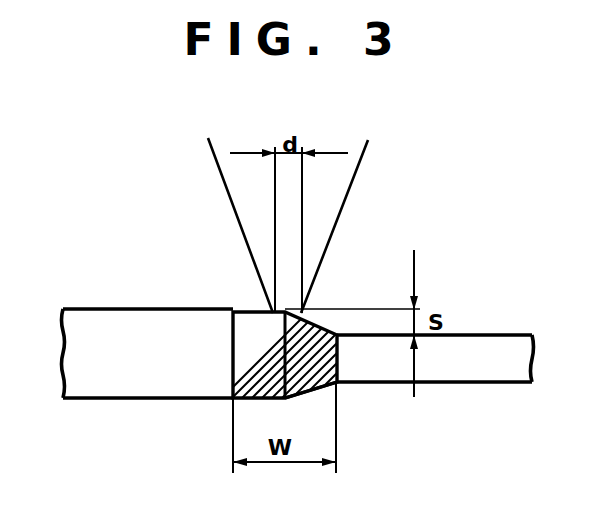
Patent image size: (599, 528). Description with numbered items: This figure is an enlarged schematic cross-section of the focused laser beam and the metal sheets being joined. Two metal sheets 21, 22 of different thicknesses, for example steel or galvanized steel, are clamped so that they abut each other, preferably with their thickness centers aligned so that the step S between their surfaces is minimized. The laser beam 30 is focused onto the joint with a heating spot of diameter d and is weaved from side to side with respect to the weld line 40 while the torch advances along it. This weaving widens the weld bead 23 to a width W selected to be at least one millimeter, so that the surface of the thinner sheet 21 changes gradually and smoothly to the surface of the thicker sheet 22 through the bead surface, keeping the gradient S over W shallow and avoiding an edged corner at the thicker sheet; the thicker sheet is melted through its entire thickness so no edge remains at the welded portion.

The metal sheet 21 is at (138, 322).
The metal sheet 22 is at (475, 350).
The weld bead 23 is at (243, 346).
The laser beam 30 is at (197, 131).
The weld line 40 is at (300, 367).